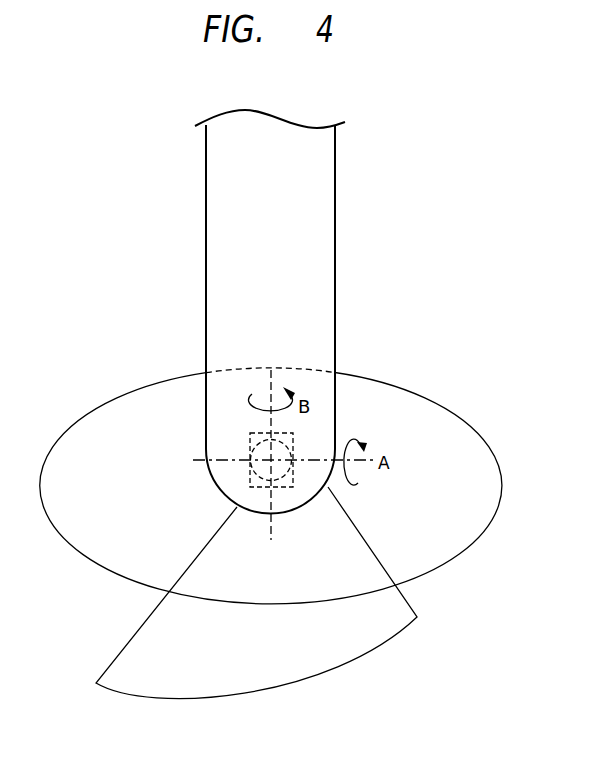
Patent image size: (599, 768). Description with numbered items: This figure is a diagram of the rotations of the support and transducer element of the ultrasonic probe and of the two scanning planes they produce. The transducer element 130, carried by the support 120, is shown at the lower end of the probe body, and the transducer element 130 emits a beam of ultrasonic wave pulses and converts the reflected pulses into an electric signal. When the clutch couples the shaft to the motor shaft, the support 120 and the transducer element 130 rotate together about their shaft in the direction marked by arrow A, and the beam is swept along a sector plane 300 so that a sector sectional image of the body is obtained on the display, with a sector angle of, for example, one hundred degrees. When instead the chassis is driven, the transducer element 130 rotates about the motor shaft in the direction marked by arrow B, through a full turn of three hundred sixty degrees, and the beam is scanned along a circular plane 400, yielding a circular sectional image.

The support 120 is at (252, 446).
The transducer element 130 is at (263, 472).
The sector plane 300 is at (303, 668).
The circular plane 400 is at (430, 422).